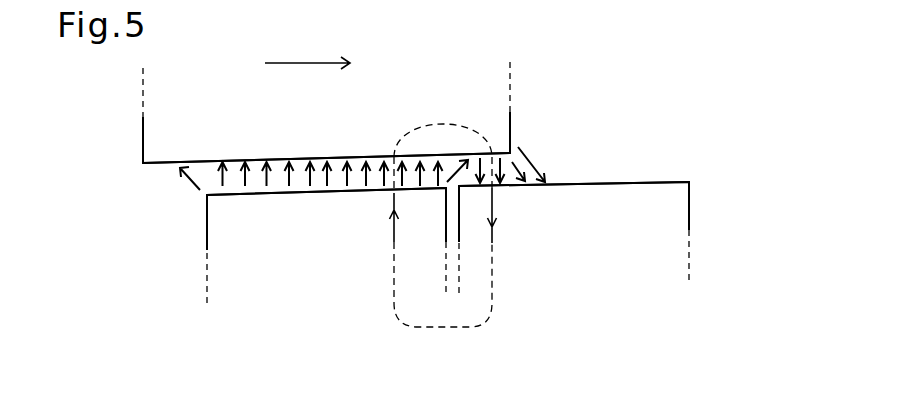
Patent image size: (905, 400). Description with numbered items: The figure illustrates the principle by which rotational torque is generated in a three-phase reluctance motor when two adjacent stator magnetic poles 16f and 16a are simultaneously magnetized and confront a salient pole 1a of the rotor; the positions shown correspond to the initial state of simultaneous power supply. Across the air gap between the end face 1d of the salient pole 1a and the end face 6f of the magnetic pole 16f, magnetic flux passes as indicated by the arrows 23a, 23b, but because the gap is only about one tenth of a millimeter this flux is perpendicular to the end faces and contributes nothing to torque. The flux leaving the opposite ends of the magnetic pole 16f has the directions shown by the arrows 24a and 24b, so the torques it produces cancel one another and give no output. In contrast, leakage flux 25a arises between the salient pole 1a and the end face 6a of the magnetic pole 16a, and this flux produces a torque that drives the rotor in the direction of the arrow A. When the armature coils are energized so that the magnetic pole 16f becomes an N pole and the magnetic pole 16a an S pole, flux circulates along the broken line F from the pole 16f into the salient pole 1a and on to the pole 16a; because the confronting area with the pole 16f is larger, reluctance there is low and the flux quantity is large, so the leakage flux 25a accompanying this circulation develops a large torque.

The salient pole 1a is at (512, 112).
The end face 1d is at (337, 158).
The arrow A is at (317, 65).
The magnetic pole 16f is at (207, 236).
The magnetic pole 16a is at (690, 215).
The arrows 23a is at (268, 182).
The arrows 23b is at (290, 182).
The arrow 24a is at (193, 188).
The arrow 24b is at (452, 172).
The leakage flux 25a is at (533, 158).
The end face 6f is at (361, 190).
The end face 6a is at (606, 183).
The broken line F is at (475, 323).